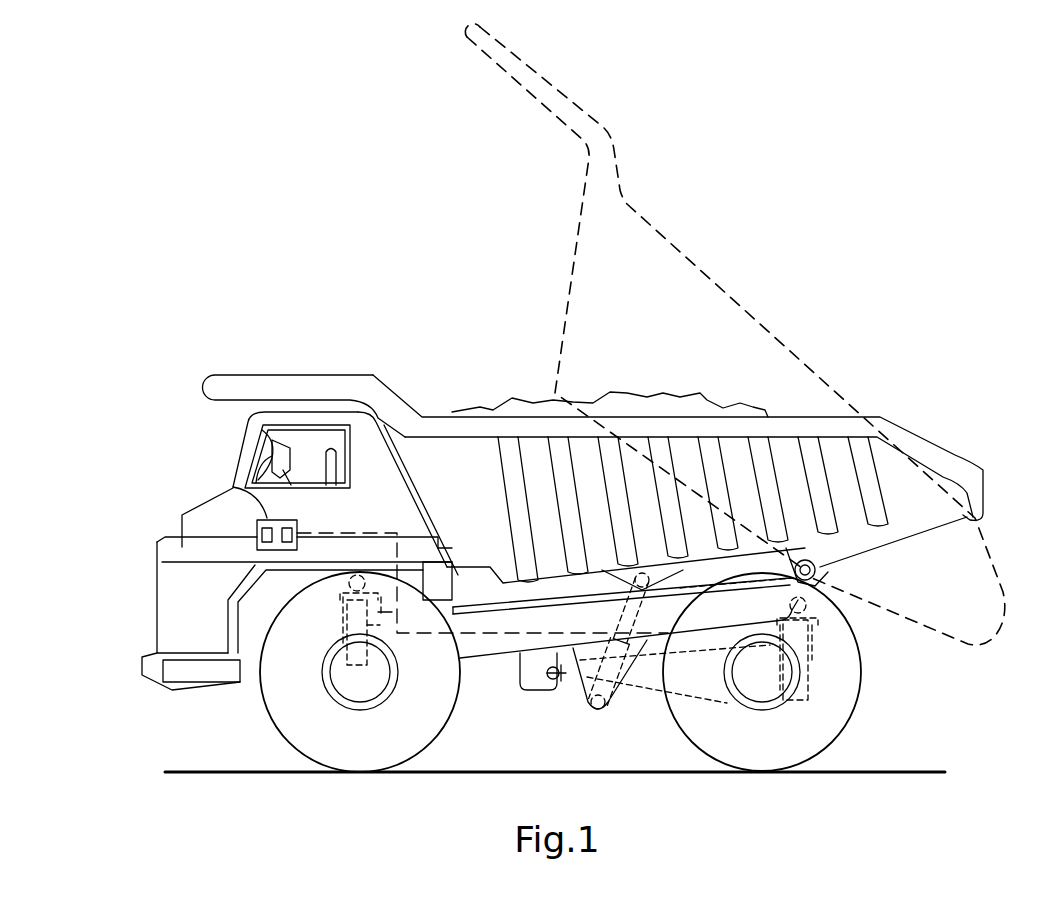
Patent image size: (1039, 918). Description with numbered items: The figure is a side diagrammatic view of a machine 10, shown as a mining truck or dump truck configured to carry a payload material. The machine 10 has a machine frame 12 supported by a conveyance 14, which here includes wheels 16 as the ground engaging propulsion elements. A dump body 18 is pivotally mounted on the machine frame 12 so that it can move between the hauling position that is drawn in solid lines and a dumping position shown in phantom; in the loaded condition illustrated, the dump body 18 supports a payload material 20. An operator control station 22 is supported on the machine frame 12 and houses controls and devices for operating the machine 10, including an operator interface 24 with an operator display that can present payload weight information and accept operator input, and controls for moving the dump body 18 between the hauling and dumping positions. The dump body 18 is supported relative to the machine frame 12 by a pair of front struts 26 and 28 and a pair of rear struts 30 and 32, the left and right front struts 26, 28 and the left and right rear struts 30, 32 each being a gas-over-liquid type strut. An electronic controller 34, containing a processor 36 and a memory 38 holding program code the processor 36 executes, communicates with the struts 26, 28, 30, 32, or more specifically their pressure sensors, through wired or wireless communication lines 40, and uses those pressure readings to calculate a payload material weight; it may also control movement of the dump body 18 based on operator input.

The machine 10 is at (766, 281).
The machine frame 12 is at (515, 652).
The conveyance 14 is at (255, 702).
The wheels 16 is at (283, 746).
The dump body 18 is at (778, 416).
The payload material 20 is at (479, 404).
The operator control station 22 is at (245, 443).
The operator interface 24 is at (278, 430).
The first front strut 26 is at (372, 628).
The second front strut 28 is at (340, 615).
The first rear strut 30 is at (810, 669).
The second rear strut 32 is at (770, 690).
The electronic controller 34 is at (250, 500).
The processor 36 is at (257, 527).
The memory 38 is at (298, 528).
The communication lines 40 is at (478, 640).